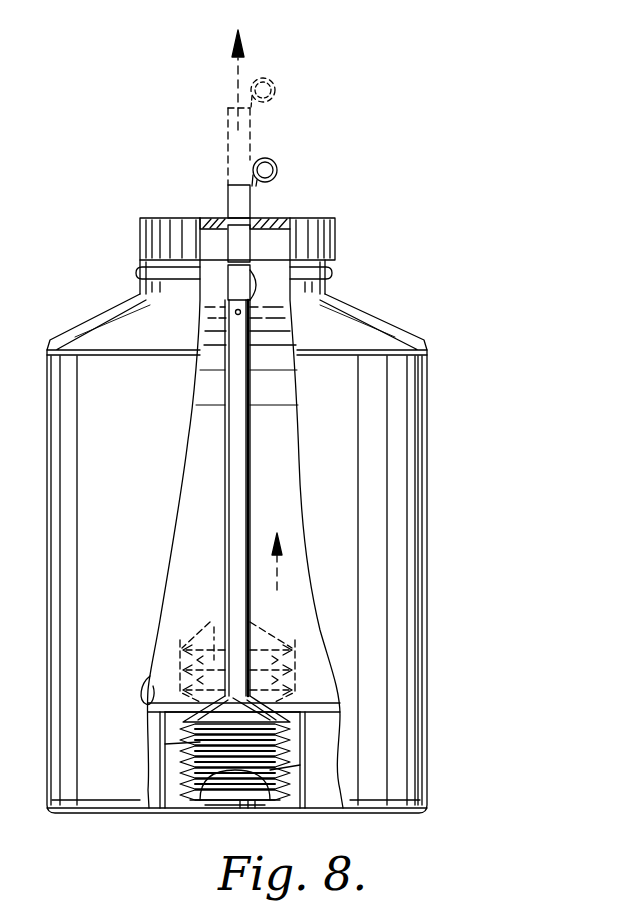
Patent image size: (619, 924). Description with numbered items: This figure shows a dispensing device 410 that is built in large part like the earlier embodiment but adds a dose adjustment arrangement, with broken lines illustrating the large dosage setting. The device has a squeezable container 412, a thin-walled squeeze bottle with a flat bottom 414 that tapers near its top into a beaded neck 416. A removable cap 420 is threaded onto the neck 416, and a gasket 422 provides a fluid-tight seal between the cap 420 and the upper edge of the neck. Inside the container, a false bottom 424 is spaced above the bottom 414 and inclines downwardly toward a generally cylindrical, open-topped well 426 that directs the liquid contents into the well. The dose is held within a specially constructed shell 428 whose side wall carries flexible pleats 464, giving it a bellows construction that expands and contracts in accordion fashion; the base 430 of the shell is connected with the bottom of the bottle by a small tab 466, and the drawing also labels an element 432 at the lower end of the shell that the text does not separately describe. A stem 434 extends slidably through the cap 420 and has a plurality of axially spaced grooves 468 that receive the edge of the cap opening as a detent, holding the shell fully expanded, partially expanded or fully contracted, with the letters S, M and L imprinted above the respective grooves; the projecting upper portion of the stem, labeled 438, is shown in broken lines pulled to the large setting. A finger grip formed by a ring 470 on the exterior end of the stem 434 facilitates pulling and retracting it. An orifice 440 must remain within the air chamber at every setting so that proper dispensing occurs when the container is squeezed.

The dispensing device 410 is at (105, 290).
The squeezable container 412 is at (58, 510).
The bottom 414 is at (158, 810).
The beaded neck 416 is at (335, 284).
The cap 420 is at (337, 238).
The gasket 422 is at (208, 222).
The false bottom 424 is at (146, 682).
The well 426 is at (290, 735).
The shell 428 is at (212, 622).
The base of shell 430 is at (218, 802).
The cup 432 is at (240, 803).
The stem 434 is at (236, 484).
The plunger rod 438 is at (226, 108).
The orifice 440 is at (235, 311).
The flexible pleats 464 is at (284, 655).
The tab 466 is at (255, 808).
The grooves 468 is at (252, 226).
The ring 470 is at (276, 88).